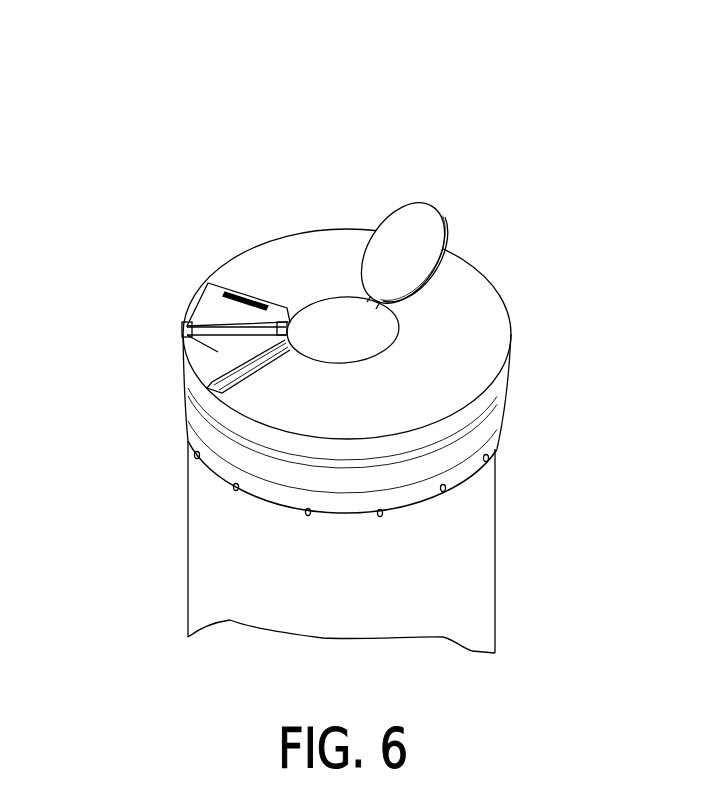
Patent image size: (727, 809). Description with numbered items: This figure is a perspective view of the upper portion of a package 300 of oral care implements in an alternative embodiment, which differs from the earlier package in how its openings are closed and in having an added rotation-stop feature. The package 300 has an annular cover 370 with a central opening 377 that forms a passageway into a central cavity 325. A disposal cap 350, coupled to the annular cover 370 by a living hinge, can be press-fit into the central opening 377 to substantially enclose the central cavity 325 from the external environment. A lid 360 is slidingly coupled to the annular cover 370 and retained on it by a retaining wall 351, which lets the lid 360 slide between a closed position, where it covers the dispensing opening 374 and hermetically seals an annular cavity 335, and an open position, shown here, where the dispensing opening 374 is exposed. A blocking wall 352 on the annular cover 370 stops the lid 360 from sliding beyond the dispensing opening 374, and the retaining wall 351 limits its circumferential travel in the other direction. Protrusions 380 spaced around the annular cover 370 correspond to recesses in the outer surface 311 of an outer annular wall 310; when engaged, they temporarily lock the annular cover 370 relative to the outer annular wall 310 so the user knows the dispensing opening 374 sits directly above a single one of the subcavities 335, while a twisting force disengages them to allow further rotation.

The package 300 is at (170, 82).
The outer annular wall 310 is at (202, 540).
The outer surface 311 is at (212, 588).
The central cavity 325 is at (382, 341).
The annular cavity 335 is at (210, 362).
The disposal cap 350 is at (413, 222).
The retaining wall 351 is at (183, 323).
The blocking wall 352 is at (223, 387).
The lid 360 is at (235, 313).
The annular cover 370 is at (477, 296).
The dispensing opening 374 is at (183, 347).
The central opening 377 is at (328, 290).
The protrusions 380 is at (447, 489).